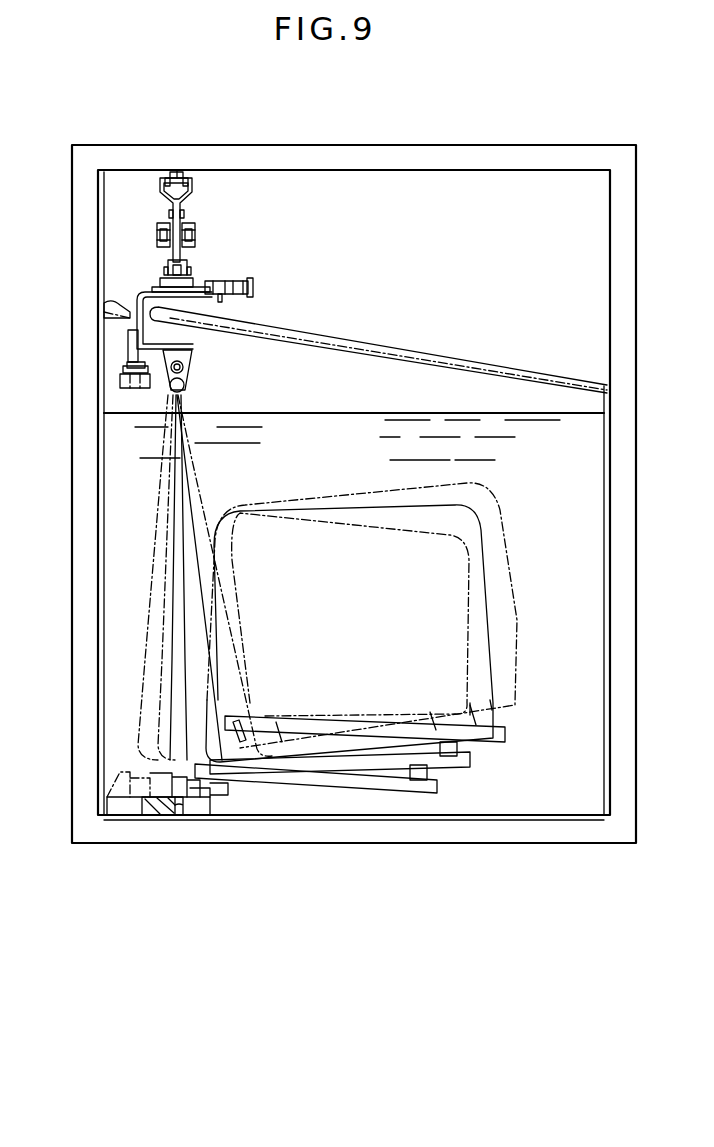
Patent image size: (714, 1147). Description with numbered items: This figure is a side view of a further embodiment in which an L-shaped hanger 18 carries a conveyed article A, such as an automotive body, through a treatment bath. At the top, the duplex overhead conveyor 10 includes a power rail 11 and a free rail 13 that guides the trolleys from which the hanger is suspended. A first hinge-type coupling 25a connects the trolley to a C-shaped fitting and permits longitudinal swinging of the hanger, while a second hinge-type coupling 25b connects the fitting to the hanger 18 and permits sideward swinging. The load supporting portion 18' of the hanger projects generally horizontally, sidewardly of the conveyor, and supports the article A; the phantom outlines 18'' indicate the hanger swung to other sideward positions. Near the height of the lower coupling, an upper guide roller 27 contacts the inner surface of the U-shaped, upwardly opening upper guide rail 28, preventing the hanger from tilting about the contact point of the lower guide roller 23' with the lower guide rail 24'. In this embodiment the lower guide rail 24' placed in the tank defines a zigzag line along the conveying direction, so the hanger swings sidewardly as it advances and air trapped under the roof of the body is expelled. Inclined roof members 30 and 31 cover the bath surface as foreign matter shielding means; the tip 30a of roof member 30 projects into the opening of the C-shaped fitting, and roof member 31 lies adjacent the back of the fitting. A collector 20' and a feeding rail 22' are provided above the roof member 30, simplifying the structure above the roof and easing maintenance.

The duplex overhead conveyor 10 is at (150, 198).
The power rail 11 is at (176, 170).
The free rail 13 is at (195, 224).
The first hinge-type coupling 25a is at (190, 266).
The collector 20' is at (256, 276).
The feeding rail 22' is at (262, 299).
The roof member 31 is at (102, 306).
The roof member 30 is at (447, 350).
The tip of roof member 30a is at (184, 326).
The upper guide roller 27 is at (125, 364).
The upper guide rail 28 is at (120, 386).
The second hinge-type coupling 25b is at (190, 367).
The L-shaped hanger 18 is at (128, 577).
The wire (phantom positions) 18'' is at (151, 577).
The conveyed article A is at (478, 512).
The load supporting portion 18' is at (368, 754).
The lower guide rail 24' is at (156, 848).
The lower guide roller 23' is at (203, 848).